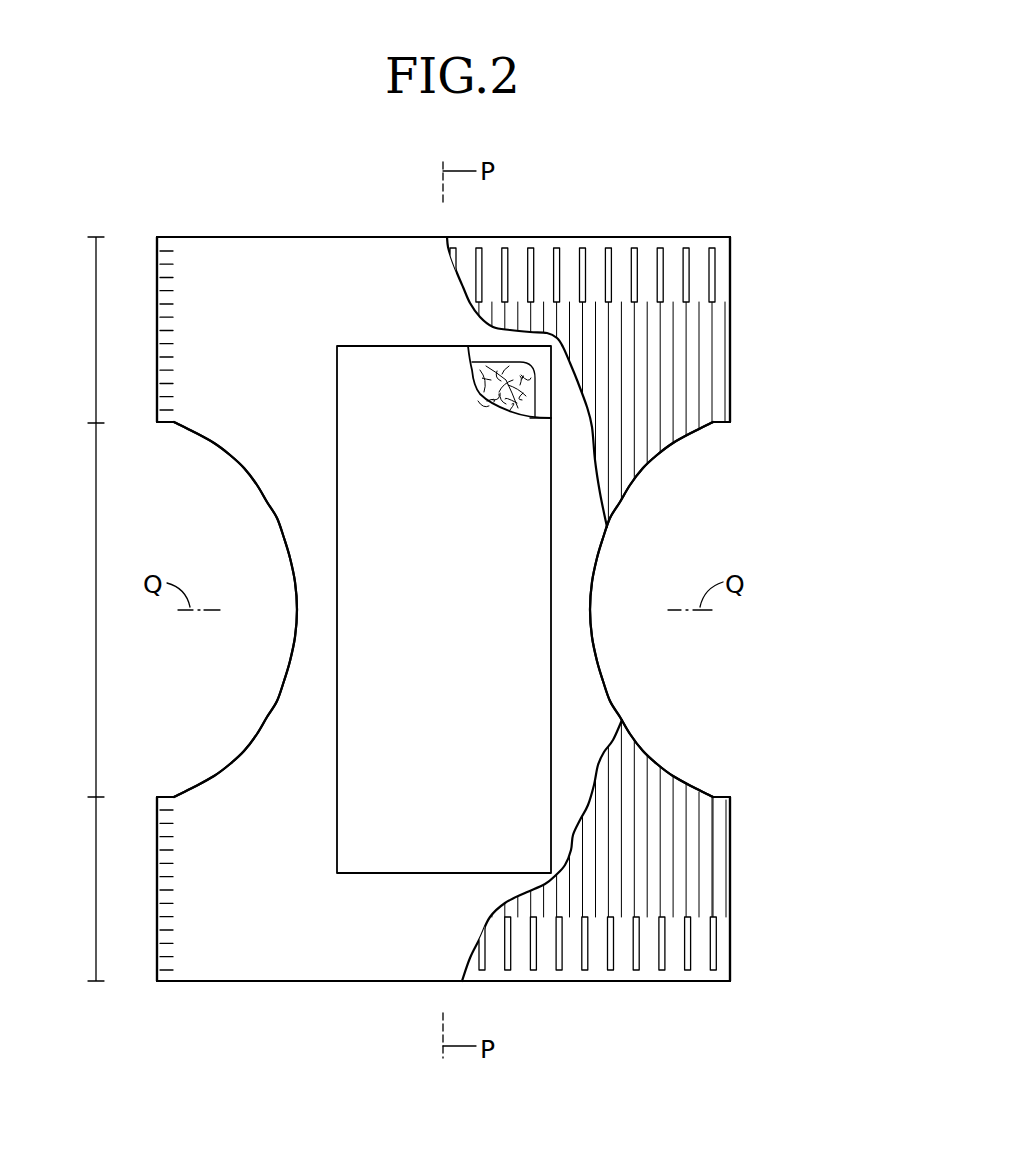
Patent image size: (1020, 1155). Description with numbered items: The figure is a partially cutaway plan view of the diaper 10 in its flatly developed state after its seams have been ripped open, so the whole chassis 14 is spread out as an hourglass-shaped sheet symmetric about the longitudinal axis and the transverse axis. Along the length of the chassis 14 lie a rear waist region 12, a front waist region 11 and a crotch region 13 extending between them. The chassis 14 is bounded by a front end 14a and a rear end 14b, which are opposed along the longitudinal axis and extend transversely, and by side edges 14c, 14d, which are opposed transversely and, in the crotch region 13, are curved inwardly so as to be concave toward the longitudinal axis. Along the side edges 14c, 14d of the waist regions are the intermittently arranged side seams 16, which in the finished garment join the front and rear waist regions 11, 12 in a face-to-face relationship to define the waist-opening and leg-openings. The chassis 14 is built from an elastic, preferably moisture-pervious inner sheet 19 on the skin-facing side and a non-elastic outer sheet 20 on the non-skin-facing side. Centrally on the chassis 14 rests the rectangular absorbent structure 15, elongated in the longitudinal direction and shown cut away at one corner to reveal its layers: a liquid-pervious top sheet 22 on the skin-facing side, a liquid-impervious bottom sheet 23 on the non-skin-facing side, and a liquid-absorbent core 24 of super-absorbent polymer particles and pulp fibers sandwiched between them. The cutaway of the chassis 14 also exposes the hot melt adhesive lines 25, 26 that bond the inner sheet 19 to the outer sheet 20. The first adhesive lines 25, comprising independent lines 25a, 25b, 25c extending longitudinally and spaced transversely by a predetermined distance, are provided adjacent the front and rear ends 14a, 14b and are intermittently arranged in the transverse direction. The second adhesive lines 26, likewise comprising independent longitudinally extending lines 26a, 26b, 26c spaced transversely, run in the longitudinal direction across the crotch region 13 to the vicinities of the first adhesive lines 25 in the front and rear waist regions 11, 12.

The diaper 10 is at (752, 163).
The front waist region 11 is at (96, 892).
The rear waist region 12 is at (96, 317).
The crotch region 13 is at (96, 621).
The chassis 14 is at (735, 293).
The front end 14a is at (572, 983).
The rear end 14b is at (571, 236).
The side edge 14c is at (157, 335).
The side edge 14d is at (733, 360).
The absorbent structure 15 is at (556, 653).
The side seams 16 is at (168, 289).
The inner sheet 19 is at (295, 262).
The outer sheet 20 is at (522, 236).
The top sheet 22 is at (534, 458).
The bottom sheet 23 is at (545, 398).
The liquid-absorbent core 24 is at (495, 368).
The first adhesive lines 25 is at (544, 609).
The first adhesive line 25a is at (716, 268).
The first adhesive line 25b is at (687, 255).
The first adhesive line 25c is at (661, 250).
The second adhesive lines 26 is at (589, 609).
The second adhesive line 26a is at (727, 817).
The second adhesive line 26b is at (714, 845).
The second adhesive line 26c is at (700, 867).